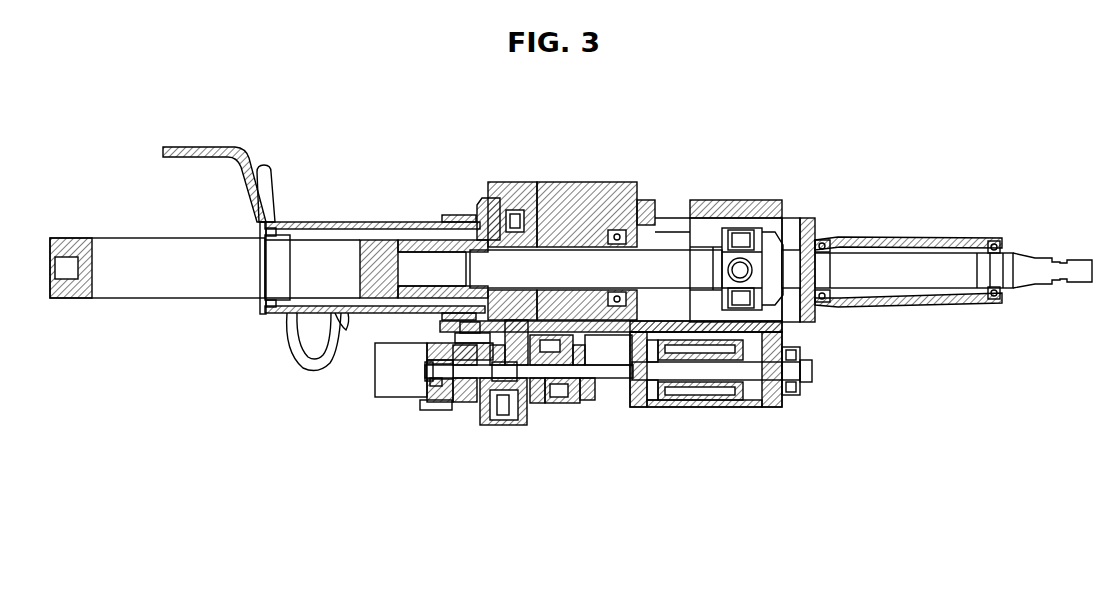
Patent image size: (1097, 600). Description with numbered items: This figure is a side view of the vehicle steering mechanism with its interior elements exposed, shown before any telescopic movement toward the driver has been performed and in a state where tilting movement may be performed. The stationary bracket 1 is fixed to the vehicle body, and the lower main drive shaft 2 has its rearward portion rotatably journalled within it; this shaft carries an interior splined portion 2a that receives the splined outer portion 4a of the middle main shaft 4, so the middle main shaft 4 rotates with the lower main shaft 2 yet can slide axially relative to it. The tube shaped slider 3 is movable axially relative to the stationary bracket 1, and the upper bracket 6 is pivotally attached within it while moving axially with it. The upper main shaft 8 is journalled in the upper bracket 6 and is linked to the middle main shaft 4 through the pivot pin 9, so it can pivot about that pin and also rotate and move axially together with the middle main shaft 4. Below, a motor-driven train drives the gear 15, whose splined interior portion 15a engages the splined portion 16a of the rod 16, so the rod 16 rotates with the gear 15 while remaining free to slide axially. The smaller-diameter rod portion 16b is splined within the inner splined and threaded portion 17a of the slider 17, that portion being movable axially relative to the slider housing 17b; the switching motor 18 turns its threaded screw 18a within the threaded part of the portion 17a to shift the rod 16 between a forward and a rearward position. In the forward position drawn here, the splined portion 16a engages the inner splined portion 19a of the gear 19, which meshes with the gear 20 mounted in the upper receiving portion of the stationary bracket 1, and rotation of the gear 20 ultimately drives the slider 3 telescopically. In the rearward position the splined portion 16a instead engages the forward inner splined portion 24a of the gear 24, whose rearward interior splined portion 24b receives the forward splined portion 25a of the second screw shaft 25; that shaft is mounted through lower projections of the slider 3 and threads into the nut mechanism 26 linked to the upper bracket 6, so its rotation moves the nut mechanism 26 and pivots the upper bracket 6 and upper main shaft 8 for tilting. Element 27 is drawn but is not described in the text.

The stationary bracket 1 is at (552, 215).
The lower main drive shaft 2 is at (197, 257).
The interior splined portion 2a is at (490, 262).
The tube shaped slider 3 is at (722, 200).
The middle main shaft 4 is at (652, 268).
The splined outer portion 4a is at (585, 210).
The upper bracket 6 is at (838, 234).
The upper main shaft 8 is at (898, 272).
The pivot pin 9 is at (745, 268).
The gear 15 is at (566, 406).
The splined interior portion 15a is at (582, 402).
The rod 16 is at (475, 405).
The splined portion 16a is at (548, 408).
The rod portion 16b is at (465, 408).
The slider 17 is at (440, 406).
The inner splined and threaded portion 17a is at (437, 384).
The slider housing 17b is at (452, 440).
The motor 18 is at (383, 377).
The threaded screw 18a is at (432, 372).
The gear 19 is at (508, 425).
The inner splined portion 19a is at (522, 420).
The gear 20 is at (515, 212).
The gear 24 is at (588, 383).
The forward inner splined portion 24a is at (592, 397).
The rearward interior splined portion 24b is at (608, 350).
The second screw shaft 25 is at (750, 398).
The forward splined portion 25a is at (622, 380).
The nut mechanism 26 is at (705, 400).
The fastening screw 27 is at (455, 342).